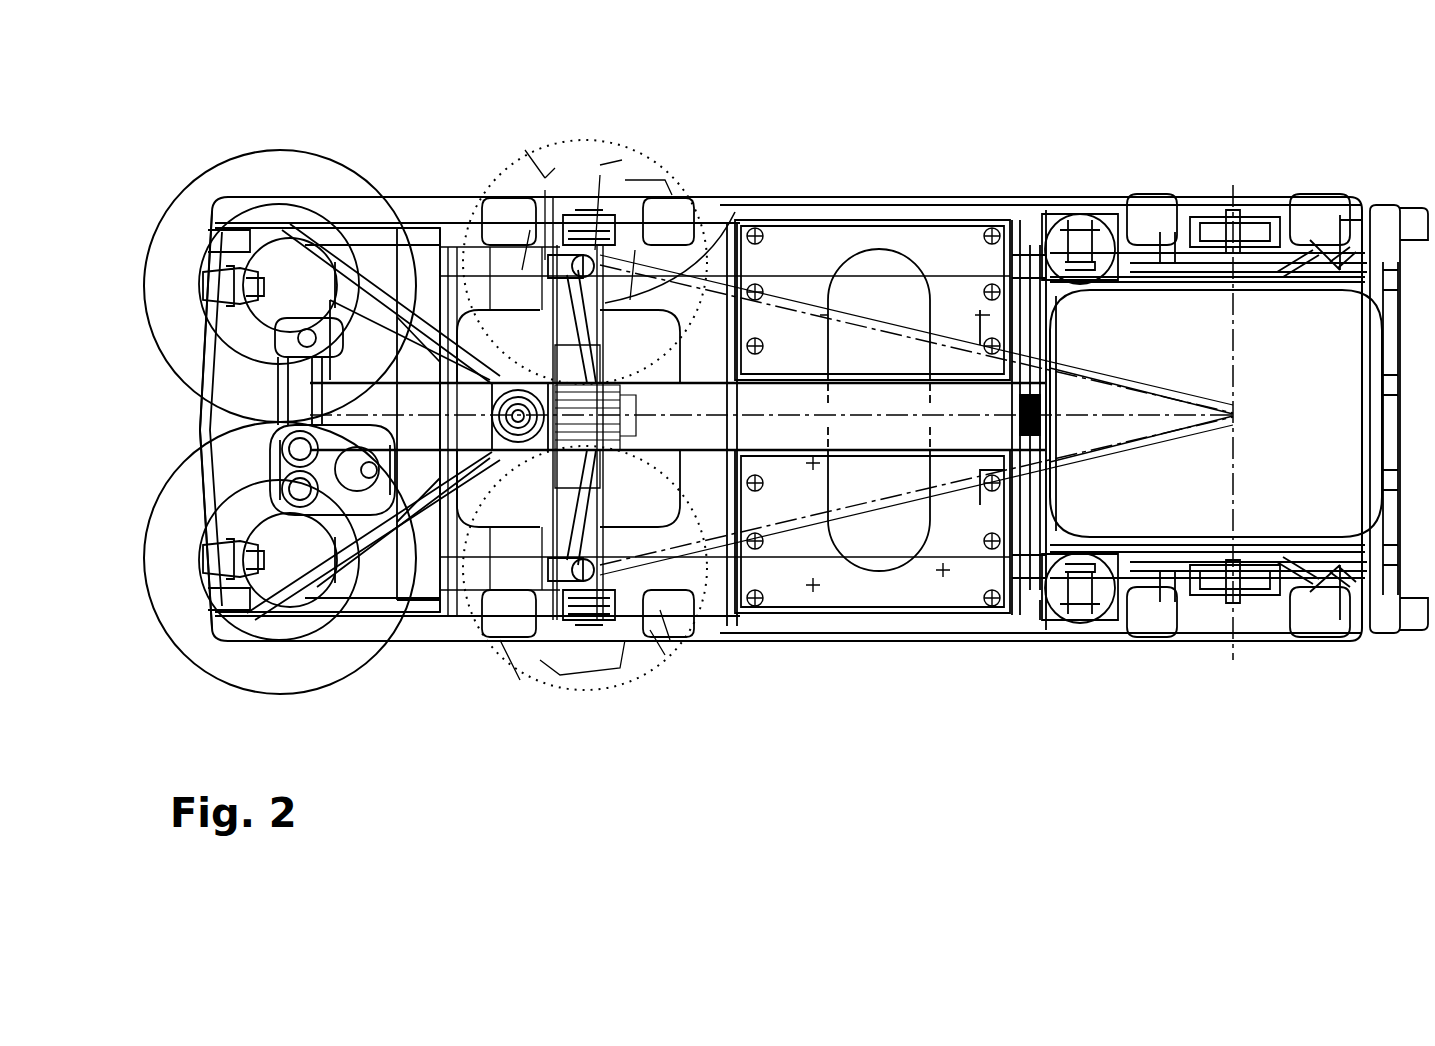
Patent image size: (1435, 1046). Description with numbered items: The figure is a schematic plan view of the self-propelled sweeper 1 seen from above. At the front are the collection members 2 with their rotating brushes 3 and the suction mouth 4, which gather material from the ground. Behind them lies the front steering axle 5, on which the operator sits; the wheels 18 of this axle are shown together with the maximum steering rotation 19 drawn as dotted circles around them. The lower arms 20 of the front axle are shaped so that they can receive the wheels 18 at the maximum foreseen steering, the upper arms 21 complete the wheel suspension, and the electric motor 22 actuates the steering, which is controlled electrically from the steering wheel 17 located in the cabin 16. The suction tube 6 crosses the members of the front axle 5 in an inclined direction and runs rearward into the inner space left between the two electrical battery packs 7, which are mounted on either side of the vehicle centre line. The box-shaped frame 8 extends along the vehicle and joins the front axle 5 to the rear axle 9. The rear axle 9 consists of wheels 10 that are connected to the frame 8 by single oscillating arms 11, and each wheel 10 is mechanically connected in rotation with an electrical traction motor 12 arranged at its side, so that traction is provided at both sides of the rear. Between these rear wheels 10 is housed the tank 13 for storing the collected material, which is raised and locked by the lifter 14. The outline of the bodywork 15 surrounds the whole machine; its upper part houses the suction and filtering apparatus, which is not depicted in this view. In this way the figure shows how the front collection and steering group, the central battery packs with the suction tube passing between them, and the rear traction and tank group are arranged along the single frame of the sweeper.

The sweeper 1 is at (950, 138).
The collection members 2 is at (285, 130).
The rotating brushes 3 is at (175, 242).
The suction mouth 4 is at (425, 490).
The front steering axle 5 is at (676, 680).
The suction tube 6 is at (772, 436).
The electrical battery packs 7 is at (808, 262).
The box-shaped frame 8 is at (704, 378).
The rear axle 9 is at (1112, 668).
The wheels 10 is at (1152, 196).
The single oscillating arms 11 is at (1340, 270).
The electrical traction motor 12 is at (1090, 245).
The tank 13 is at (1340, 437).
The lifter 14 is at (1240, 285).
The bodywork 15 is at (843, 198).
The cabin 16 is at (198, 430).
The steering wheel 17 is at (325, 470).
The wheels 18 is at (495, 205).
The maximum steering rotation 19 is at (620, 138).
The lower arms 20 is at (555, 220).
The upper arms 21 is at (735, 212).
The electric motor 22 is at (500, 265).